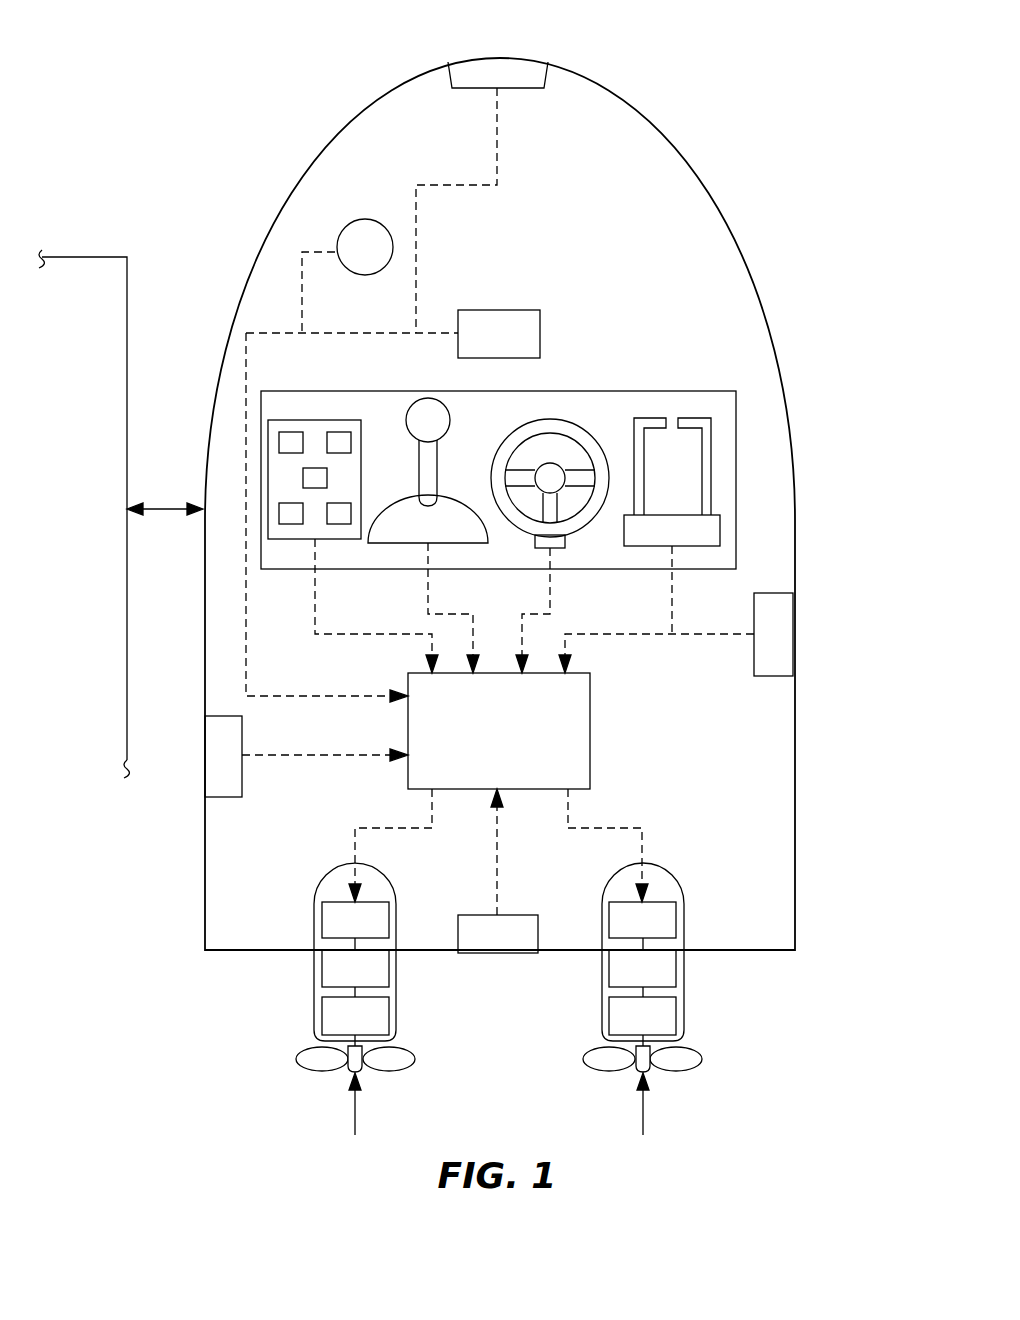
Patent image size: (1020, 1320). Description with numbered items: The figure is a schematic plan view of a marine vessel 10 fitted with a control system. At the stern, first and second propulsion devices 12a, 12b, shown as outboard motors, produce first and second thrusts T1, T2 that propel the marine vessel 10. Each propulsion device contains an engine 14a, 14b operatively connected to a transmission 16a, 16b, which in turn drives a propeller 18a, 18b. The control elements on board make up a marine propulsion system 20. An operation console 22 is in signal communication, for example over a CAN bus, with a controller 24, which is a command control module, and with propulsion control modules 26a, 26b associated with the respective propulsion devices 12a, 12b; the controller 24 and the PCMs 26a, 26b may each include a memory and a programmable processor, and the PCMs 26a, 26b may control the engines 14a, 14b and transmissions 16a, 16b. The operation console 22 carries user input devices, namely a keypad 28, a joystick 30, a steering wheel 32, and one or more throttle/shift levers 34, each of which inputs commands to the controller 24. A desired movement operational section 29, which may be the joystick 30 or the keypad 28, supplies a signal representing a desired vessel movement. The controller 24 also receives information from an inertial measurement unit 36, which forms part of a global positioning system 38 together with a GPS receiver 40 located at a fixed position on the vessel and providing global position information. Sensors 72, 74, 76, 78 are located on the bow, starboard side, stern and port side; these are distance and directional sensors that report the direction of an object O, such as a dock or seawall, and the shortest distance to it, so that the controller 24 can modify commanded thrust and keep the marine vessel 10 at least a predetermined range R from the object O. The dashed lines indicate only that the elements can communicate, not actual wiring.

The marine vessel 10 is at (716, 195).
The first propulsion device 12a is at (314, 921).
The second propulsion device 12b is at (684, 921).
The engine 14a is at (314, 967).
The engine 14b is at (684, 965).
The transmission 16a is at (314, 1013).
The transmission 16b is at (684, 1012).
The propeller 18a is at (300, 1060).
The propeller 18b is at (693, 1058).
The marine propulsion system 20 is at (662, 758).
The operation console 22 is at (620, 390).
The controller 24 is at (590, 713).
The propulsion control module 26a is at (340, 902).
The propulsion control module 26b is at (655, 902).
The keypad 28 is at (303, 420).
The desired movement operational section 29 is at (387, 410).
The joystick 30 is at (443, 460).
The steering wheel 32 is at (580, 432).
The throttle/shift levers 34 is at (651, 418).
The inertial measurement unit 36 is at (540, 335).
The global positioning system 38 is at (456, 258).
The GPS receiver 40 is at (383, 222).
The sensor 72 is at (523, 72).
The sensor 74 is at (776, 620).
The sensor 76 is at (513, 940).
The sensor 78 is at (222, 772).
The object O is at (80, 521).
The predetermined range R is at (168, 512).
The first thrust T1 is at (355, 1105).
The second thrust T2 is at (643, 1105).